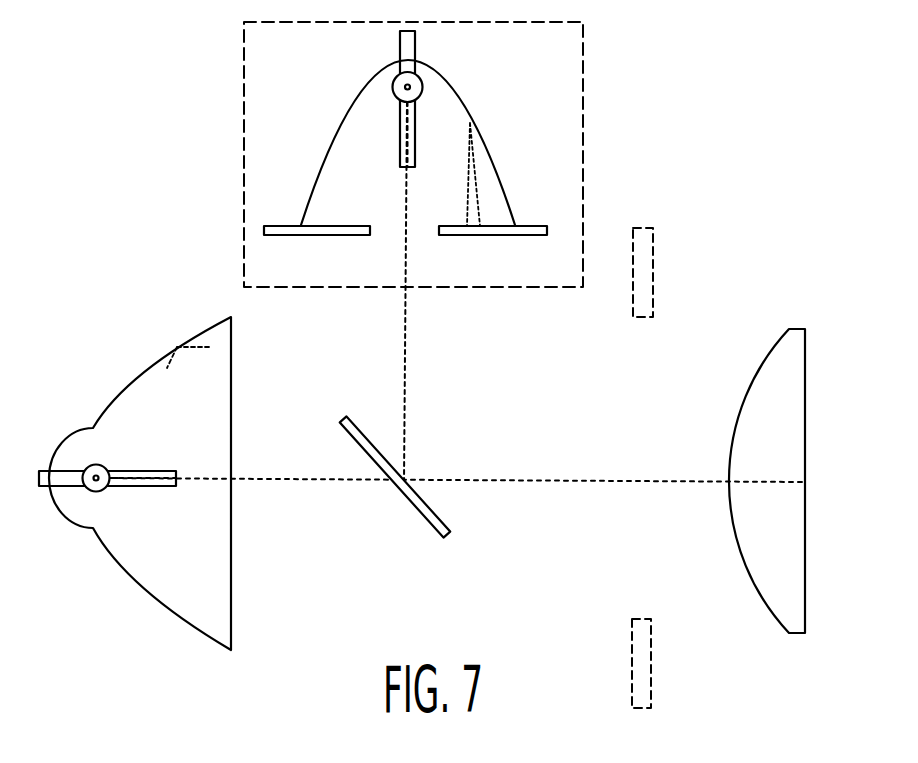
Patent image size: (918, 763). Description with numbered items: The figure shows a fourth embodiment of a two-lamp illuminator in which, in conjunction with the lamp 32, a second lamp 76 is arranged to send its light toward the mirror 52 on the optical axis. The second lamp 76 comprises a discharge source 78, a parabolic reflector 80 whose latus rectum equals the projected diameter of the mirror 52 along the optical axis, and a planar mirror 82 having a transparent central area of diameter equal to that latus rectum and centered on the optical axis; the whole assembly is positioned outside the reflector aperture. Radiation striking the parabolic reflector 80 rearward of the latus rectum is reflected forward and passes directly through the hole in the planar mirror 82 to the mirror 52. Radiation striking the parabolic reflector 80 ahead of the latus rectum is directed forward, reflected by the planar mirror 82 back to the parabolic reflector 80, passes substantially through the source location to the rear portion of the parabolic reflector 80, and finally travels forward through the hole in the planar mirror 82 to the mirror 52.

The lamp 32 is at (133, 380).
The mirror 52 is at (420, 515).
The second lamp 76 is at (493, 70).
The discharge source 78 is at (403, 87).
The parabolic reflector 80 is at (345, 123).
The planar mirror 82 is at (321, 237).